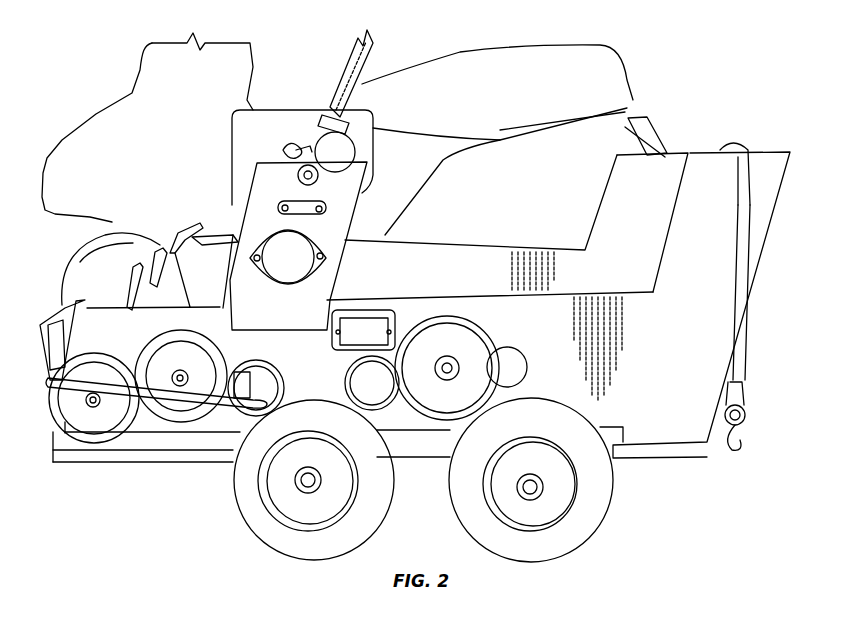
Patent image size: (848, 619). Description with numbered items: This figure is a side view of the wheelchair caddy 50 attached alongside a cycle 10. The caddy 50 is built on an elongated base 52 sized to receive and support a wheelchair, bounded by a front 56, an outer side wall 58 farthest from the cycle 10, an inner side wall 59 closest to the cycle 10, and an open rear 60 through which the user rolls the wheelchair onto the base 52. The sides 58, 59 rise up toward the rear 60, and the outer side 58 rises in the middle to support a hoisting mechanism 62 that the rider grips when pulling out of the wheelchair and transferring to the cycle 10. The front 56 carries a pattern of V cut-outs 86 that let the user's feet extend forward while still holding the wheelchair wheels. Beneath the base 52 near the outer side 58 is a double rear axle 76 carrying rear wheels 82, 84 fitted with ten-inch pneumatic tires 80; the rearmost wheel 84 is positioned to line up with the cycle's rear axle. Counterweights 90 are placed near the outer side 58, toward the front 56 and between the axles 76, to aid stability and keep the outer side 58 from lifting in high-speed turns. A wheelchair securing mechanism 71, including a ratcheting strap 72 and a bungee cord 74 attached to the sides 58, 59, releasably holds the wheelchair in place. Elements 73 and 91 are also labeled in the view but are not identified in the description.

The cycle 10 is at (118, 78).
The caddy 50 is at (413, 535).
The elongated base 52 is at (183, 457).
The front portion 56 is at (48, 430).
The outer side wall 58 is at (651, 305).
The inner side wall 59 is at (507, 226).
The rear portion 60 is at (755, 305).
The hoisting mechanism 62 is at (352, 63).
The wheelchair securing mechanism 71 is at (290, 148).
The ratcheting strap 72 is at (293, 140).
The fastener 73 is at (283, 155).
The bungee cord 74 is at (742, 145).
The double rear axle 76 is at (305, 497).
The pneumatic tires 80 is at (337, 547).
The rear wheel 82 is at (277, 510).
The rear wheel 84 is at (550, 497).
The V cut-outs 86 is at (128, 297).
The counterweights 90 is at (463, 357).
The guide roller 91 is at (476, 180).